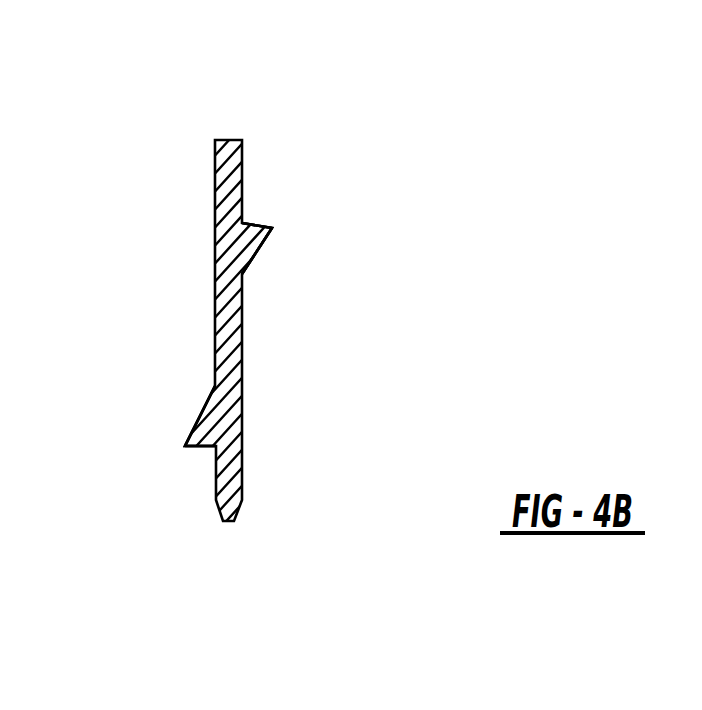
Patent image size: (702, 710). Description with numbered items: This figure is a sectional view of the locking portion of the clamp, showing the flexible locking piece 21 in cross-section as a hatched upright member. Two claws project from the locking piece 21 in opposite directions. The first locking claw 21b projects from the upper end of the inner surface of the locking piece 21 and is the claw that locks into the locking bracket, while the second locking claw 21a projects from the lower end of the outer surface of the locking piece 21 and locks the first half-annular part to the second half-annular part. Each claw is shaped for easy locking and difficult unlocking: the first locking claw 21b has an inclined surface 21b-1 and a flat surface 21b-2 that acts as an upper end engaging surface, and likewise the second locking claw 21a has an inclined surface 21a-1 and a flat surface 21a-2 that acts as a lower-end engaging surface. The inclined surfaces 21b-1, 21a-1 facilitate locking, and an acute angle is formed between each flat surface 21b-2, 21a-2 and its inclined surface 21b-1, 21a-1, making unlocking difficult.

The locking piece 21 is at (228, 468).
The second locking claw 21a is at (274, 231).
The inclined surface 21a-1 is at (260, 278).
The flat surface 21a-2 is at (258, 222).
The first locking claw 21b is at (187, 447).
The inclined surface 21b-1 is at (207, 400).
The flat surface 21b-2 is at (200, 447).